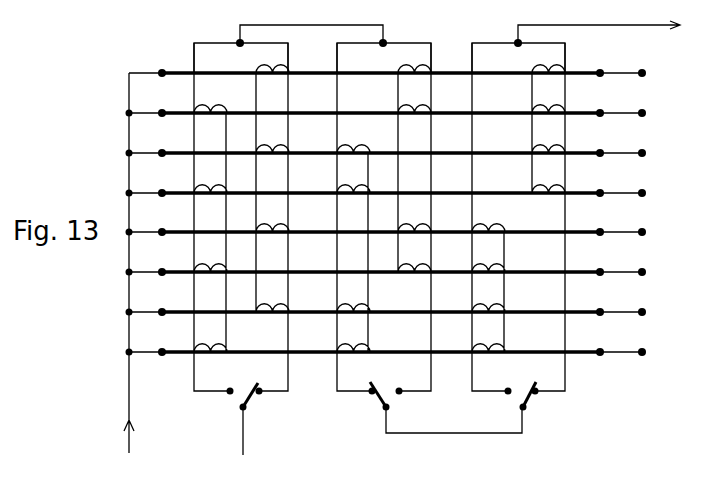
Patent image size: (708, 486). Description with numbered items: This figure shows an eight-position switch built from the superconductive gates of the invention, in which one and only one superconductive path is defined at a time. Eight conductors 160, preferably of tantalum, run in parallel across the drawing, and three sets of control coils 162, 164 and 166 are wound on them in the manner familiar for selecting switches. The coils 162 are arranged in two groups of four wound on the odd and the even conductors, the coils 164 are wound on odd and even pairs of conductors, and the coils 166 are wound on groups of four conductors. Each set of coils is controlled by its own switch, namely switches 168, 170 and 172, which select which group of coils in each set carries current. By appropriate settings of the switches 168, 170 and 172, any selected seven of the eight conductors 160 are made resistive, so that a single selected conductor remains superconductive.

The conductors 160 is at (588, 74).
The control coils 162 is at (258, 365).
The control coils 164 is at (405, 363).
The control coils 166 is at (533, 363).
The switch 168 is at (230, 410).
The switch 170 is at (375, 403).
The switch 172 is at (533, 408).